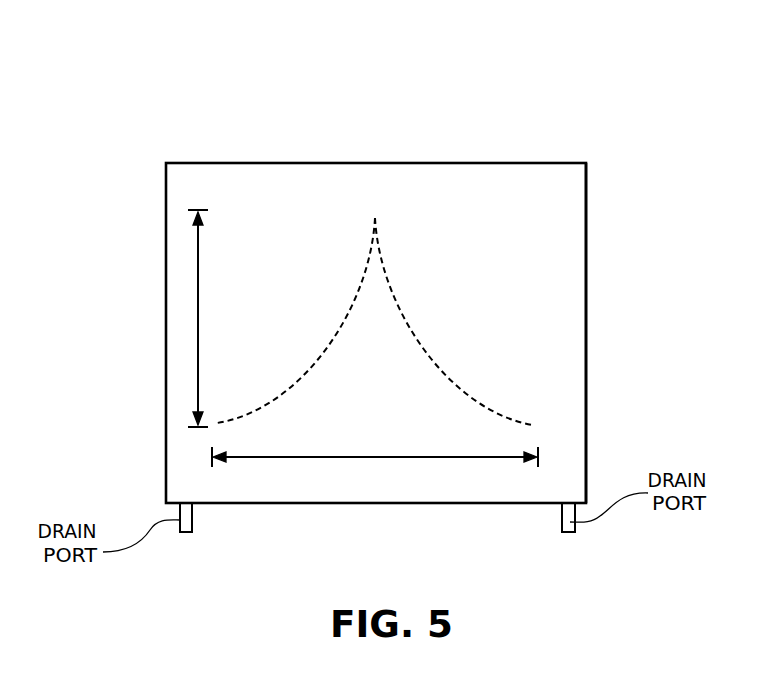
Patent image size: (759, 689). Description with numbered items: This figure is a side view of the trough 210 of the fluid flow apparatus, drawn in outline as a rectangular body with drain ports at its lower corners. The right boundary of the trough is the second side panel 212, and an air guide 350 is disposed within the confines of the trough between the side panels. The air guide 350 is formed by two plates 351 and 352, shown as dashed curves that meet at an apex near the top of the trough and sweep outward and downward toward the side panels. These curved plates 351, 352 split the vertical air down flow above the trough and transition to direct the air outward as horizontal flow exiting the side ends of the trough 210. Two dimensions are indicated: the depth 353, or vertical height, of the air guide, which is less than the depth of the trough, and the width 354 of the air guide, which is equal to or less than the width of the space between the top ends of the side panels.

The trough 210 is at (620, 128).
The second side panel 212 is at (586, 209).
The air guide 350 is at (446, 321).
The plate 351 is at (400, 318).
The plate 352 is at (352, 318).
The depth 353 is at (198, 303).
The width 354 is at (367, 457).